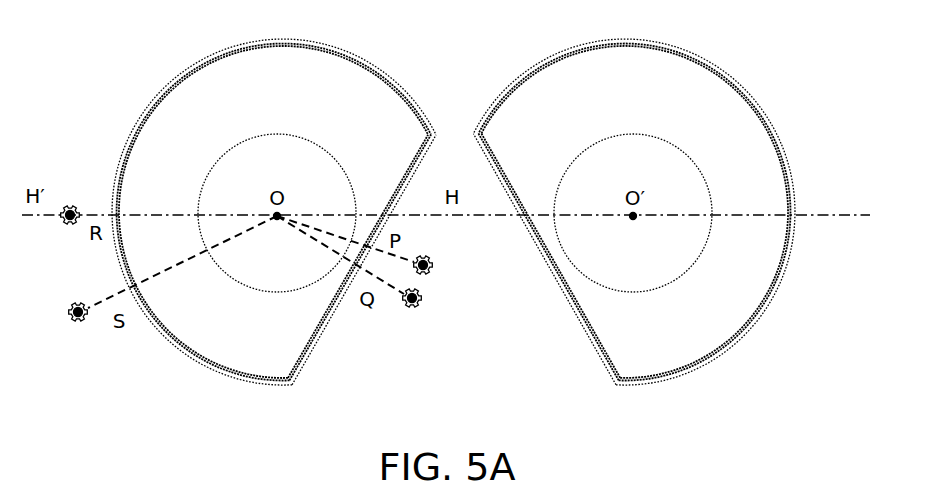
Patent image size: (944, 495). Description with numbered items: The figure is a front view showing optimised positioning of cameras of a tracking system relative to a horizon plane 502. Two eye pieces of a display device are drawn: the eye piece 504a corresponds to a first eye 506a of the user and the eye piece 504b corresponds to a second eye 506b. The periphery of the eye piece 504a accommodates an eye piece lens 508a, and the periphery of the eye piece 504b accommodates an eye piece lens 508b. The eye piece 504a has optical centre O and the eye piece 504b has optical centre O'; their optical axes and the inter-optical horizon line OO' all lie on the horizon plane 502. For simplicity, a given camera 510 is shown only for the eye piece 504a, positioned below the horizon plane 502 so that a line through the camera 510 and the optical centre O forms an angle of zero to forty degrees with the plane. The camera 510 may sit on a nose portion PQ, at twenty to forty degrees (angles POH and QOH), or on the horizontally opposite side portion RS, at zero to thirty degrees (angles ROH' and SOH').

The horizon plane 502 is at (828, 218).
The eye piece 504a is at (368, 66).
The eye piece 504b is at (538, 63).
The first eye 506a is at (316, 284).
The second eye 506b is at (587, 278).
The eye piece lens 508a is at (189, 98).
The eye piece lens 508b is at (707, 95).
The given camera 510 is at (69, 226).